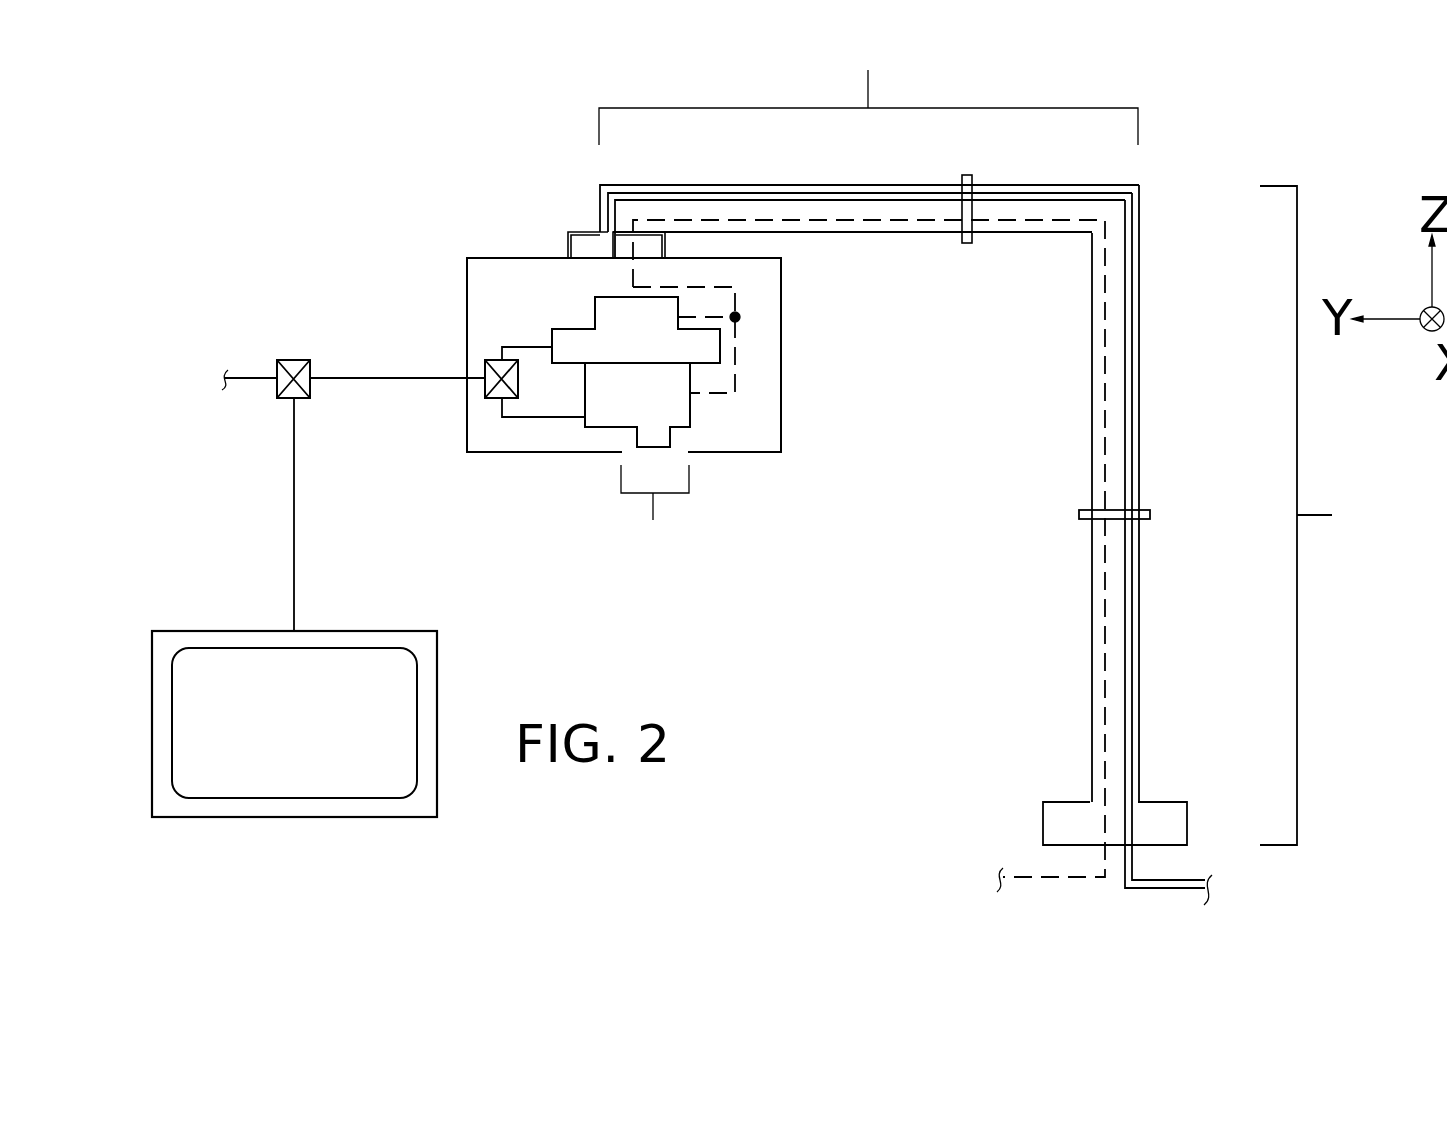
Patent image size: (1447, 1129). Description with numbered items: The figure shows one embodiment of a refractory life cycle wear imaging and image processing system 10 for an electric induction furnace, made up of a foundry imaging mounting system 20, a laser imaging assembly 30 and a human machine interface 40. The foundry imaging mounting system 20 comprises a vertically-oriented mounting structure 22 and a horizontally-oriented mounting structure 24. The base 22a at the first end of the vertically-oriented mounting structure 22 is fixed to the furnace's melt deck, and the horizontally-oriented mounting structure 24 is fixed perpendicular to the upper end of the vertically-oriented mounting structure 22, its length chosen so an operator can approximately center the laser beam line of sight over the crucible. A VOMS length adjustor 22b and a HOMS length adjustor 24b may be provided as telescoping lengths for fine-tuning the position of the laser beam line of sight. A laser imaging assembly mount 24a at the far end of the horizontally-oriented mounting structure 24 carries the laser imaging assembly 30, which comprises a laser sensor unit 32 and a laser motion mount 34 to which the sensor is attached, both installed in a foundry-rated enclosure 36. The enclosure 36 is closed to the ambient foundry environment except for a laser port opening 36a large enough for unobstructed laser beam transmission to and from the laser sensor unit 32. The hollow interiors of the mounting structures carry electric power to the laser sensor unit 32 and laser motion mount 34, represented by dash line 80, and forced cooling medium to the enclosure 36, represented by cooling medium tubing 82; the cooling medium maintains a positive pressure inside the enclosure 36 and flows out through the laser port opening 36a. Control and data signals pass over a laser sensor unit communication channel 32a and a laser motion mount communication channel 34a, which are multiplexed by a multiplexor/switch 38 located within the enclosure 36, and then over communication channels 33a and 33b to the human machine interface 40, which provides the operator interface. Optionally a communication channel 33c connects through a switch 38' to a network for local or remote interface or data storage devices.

The refractory life cycle wear imaging and image processing system 10 is at (384, 128).
The foundry imaging mounting system 20 is at (919, 407).
The vertically-oriented mounting structure (VOMS) 22 is at (1233, 515).
The base 22a is at (1177, 817).
The VOMS length adjustor 22b is at (1088, 510).
The horizontally-oriented mounting structure (HOMS) 24 is at (869, 146).
The laser imaging assembly mount 24a is at (570, 241).
The HOMS length adjustor 24b is at (963, 243).
The laser imaging assembly 30 is at (446, 513).
The laser sensor unit (LSU) 32 is at (677, 423).
The laser sensor unit communication channel 32a is at (555, 418).
The communication channel 33a is at (373, 378).
The communication channel 33b is at (294, 512).
The communication channel 33c is at (252, 378).
The laser motion mount (LMM) 34 is at (615, 316).
The laser motion mount communication channel 34a is at (525, 347).
The enclosure 36 is at (767, 375).
The laser port opening 36a is at (658, 507).
The multiplexor/switch 38 is at (498, 335).
The switch 38' is at (303, 339).
The human machine interface (HMI) 40 is at (300, 730).
The dash line (electric power supply) 80 is at (1105, 413).
The cooling medium tubing 82 is at (1128, 322).